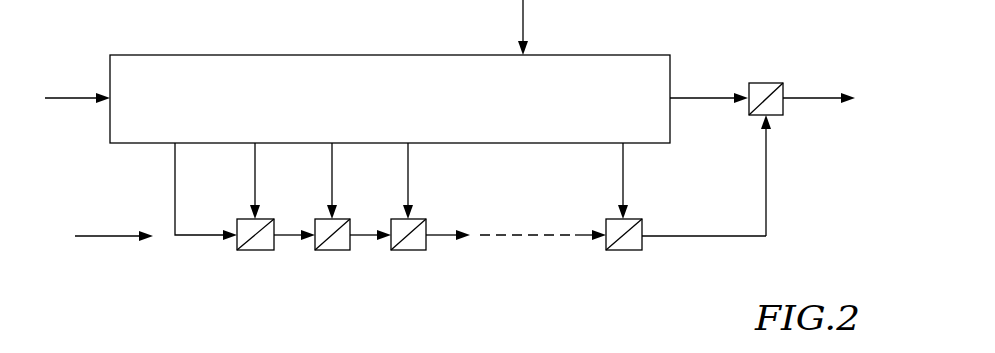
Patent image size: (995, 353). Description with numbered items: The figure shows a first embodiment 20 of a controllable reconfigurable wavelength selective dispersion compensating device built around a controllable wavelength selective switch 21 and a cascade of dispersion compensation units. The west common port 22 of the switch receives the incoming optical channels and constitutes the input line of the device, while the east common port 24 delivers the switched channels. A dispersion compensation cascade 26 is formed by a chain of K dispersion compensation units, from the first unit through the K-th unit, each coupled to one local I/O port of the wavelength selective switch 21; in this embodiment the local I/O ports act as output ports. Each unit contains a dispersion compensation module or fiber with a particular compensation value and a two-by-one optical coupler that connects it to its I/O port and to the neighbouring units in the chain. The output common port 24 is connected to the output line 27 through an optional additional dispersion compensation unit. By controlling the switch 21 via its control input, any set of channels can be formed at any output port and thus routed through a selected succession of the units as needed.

The reconfigurable wavelength selective dispersion compensating device 20 is at (198, 26).
The wavelength selective switch 21 is at (390, 99).
The west common port 22 is at (64, 90).
The east common port 24 is at (690, 84).
The dispersion compensation cascade 26 is at (96, 236).
The output line 27 is at (837, 92).